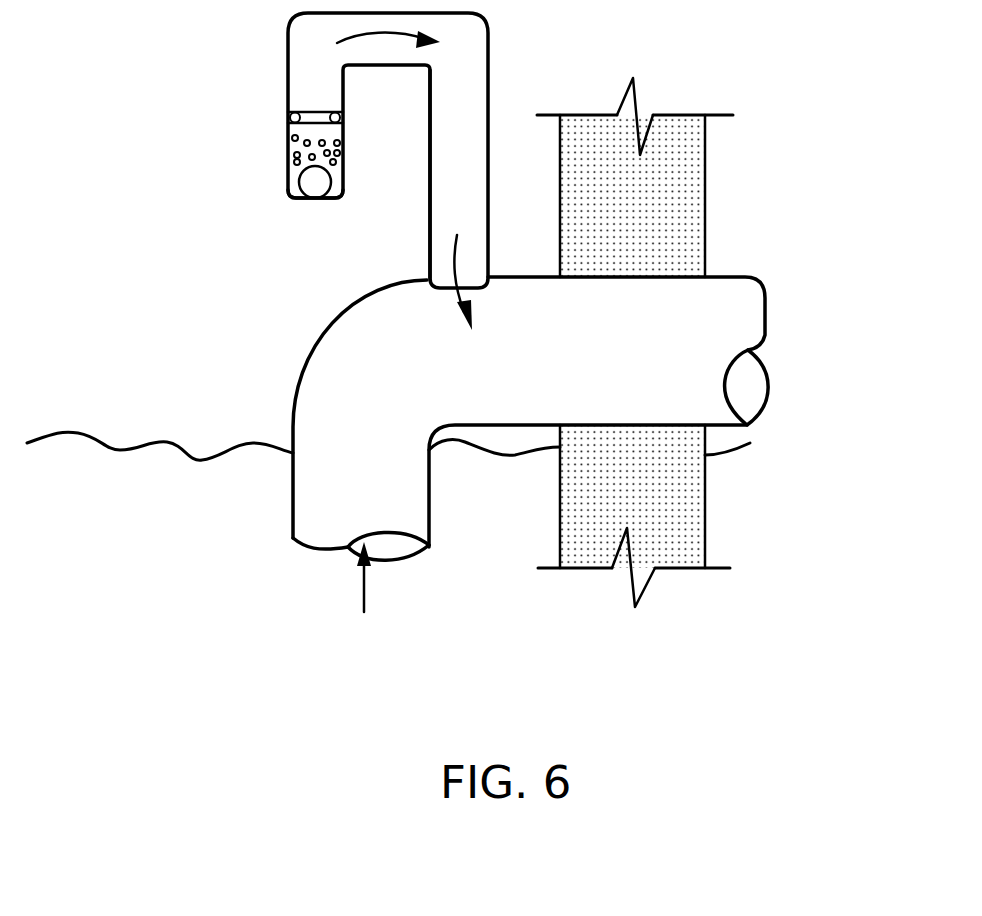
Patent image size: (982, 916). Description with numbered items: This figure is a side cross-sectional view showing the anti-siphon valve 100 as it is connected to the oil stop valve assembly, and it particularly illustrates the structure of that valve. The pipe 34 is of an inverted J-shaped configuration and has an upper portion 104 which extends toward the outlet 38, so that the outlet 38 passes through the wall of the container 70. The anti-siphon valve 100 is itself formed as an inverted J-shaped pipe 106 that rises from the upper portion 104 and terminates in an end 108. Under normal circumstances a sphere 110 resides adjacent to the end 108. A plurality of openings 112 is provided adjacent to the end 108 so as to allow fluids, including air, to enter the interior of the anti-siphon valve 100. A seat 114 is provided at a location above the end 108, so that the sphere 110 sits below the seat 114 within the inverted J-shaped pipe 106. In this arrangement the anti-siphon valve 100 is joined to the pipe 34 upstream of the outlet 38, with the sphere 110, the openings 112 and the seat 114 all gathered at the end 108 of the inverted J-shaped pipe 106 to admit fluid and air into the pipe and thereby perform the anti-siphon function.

The anti-siphon valve 100 is at (488, 42).
The upper portion 104 is at (383, 293).
The inverted J-shaped pipe 106 is at (427, 222).
The end 108 is at (315, 198).
The sphere 110 is at (305, 180).
The openings 112 is at (293, 142).
The seat 114 is at (313, 110).
The pipe 34 is at (408, 490).
The outlet 38 is at (765, 365).
The container 70 is at (690, 490).